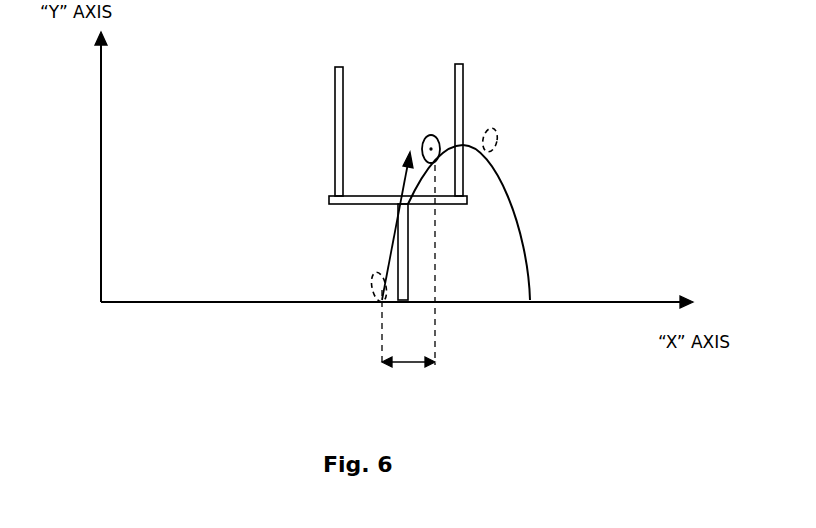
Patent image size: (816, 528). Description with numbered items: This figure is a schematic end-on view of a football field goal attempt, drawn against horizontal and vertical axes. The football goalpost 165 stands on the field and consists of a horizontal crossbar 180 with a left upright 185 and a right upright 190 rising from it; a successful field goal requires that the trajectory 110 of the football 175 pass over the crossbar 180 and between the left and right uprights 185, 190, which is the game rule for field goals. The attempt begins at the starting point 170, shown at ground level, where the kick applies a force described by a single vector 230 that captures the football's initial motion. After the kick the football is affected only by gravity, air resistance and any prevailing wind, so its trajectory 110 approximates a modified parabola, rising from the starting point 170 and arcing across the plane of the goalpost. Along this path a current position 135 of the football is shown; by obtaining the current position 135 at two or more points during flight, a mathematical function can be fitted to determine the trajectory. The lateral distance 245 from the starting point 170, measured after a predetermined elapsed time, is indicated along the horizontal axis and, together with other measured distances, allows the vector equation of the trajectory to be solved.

The trajectory 110 is at (522, 250).
The current position 135 is at (425, 138).
The football goalpost 165 is at (335, 152).
The starting point 170 is at (380, 300).
The football 175 is at (497, 142).
The crossbar 180 is at (365, 205).
The left upright 185 is at (335, 98).
The right upright 190 is at (464, 93).
The single vector 230 is at (396, 244).
The lateral distance 245 is at (408, 266).